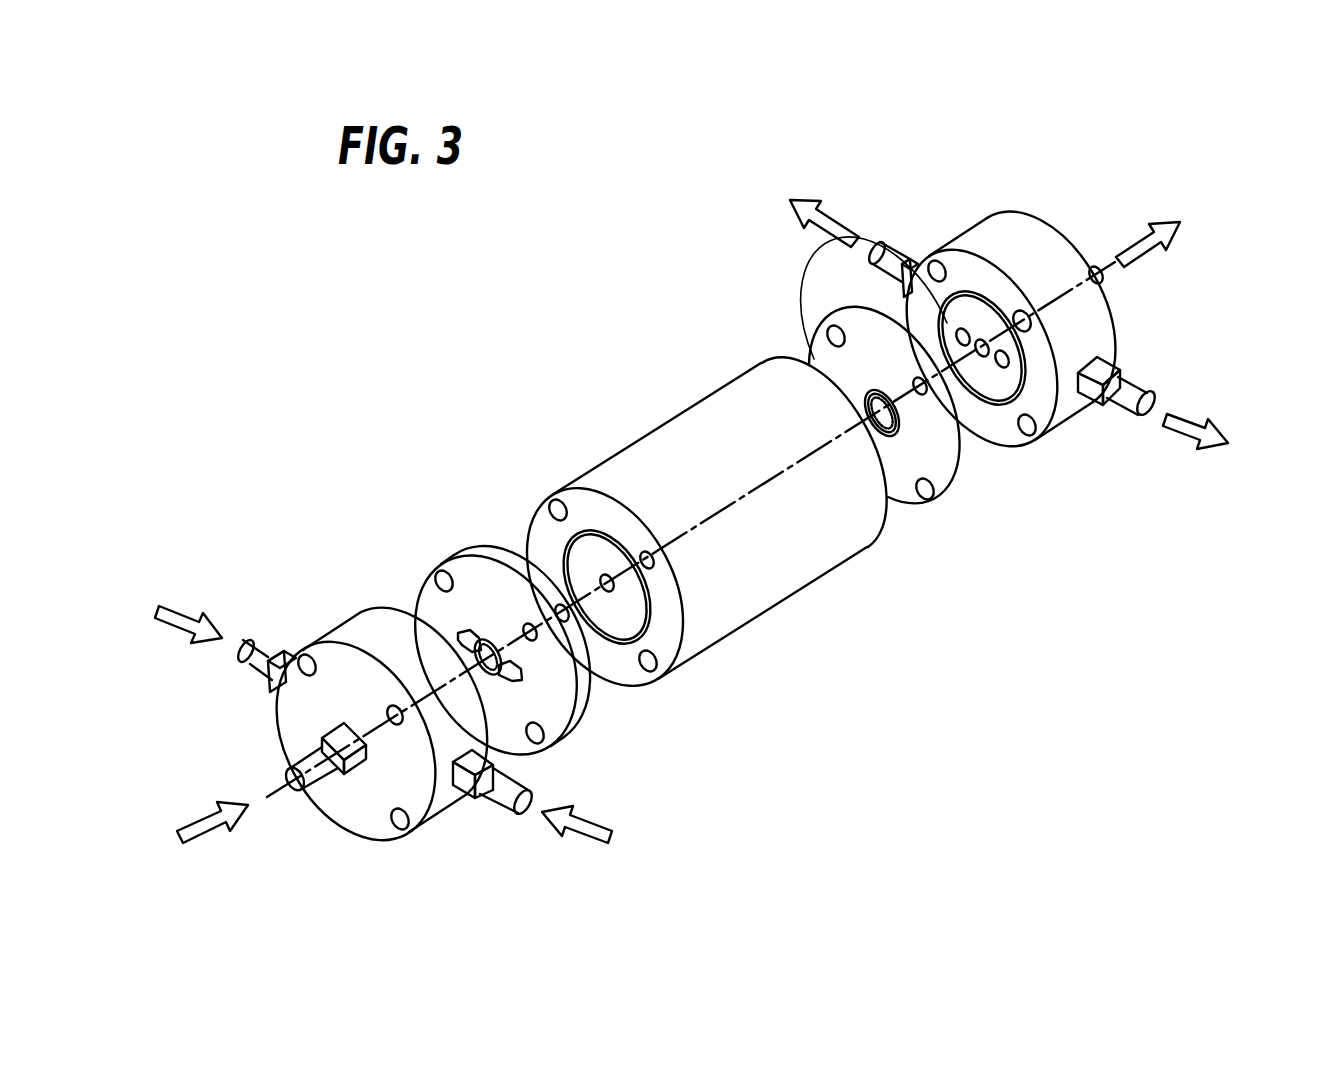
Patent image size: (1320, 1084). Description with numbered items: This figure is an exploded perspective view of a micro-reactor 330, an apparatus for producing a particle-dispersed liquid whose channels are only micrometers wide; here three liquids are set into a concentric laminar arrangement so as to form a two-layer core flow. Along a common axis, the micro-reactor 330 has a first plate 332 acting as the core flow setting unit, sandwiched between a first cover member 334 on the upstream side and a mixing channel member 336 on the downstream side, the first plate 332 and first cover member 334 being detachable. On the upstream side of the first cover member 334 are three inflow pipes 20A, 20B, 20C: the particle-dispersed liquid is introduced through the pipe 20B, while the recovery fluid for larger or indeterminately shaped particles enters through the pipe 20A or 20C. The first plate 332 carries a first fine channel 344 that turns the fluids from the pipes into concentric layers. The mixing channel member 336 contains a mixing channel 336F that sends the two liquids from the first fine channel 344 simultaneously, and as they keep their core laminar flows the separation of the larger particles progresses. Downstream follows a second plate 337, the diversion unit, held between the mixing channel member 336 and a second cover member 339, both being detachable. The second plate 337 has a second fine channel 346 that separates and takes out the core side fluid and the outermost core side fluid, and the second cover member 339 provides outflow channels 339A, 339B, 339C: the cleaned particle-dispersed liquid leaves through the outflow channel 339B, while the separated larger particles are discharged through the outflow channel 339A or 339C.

The micro-reactor 330 is at (372, 434).
The first cover member 334 is at (358, 623).
The inflow pipe 20A is at (497, 790).
The inflow pipe 20B is at (313, 775).
The inflow pipe 20C is at (258, 640).
The first plate 332 is at (547, 703).
The first fine channel 344 is at (477, 595).
The mixing channel member 336 is at (778, 592).
The mixing channel 336F is at (582, 490).
The second plate 337 is at (932, 455).
The second fine channel 346 is at (822, 360).
The second cover member 339 is at (1040, 398).
The outflow channel 339A is at (1005, 357).
The outflow channel 339B is at (982, 339).
The outflow channel 339C is at (963, 328).